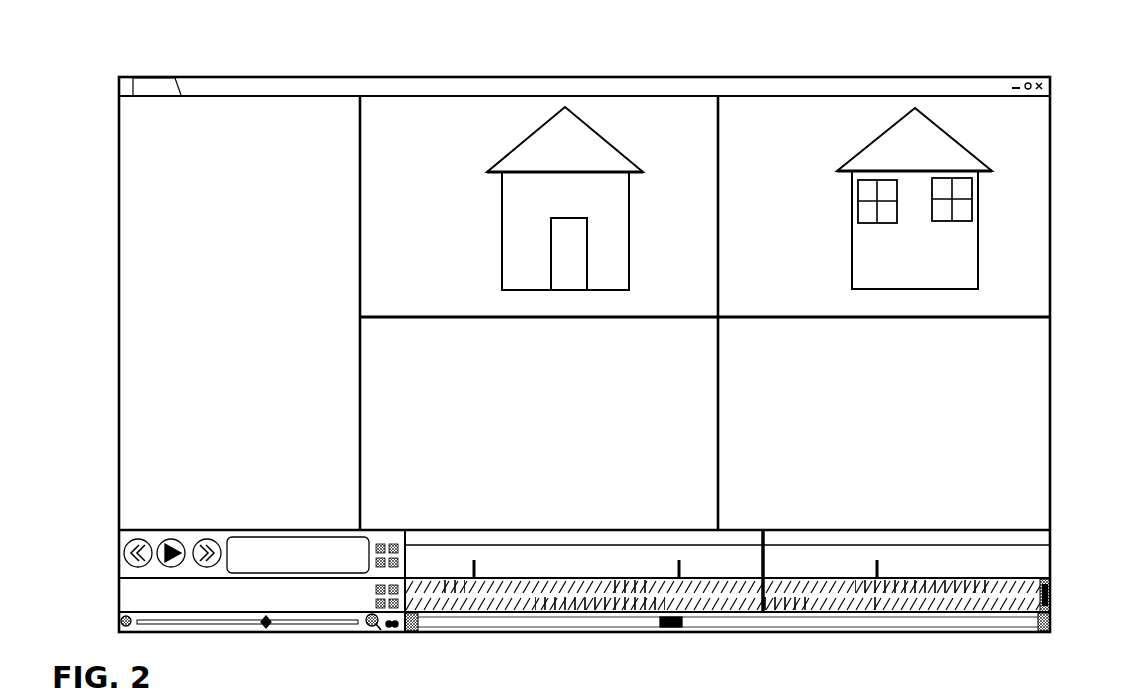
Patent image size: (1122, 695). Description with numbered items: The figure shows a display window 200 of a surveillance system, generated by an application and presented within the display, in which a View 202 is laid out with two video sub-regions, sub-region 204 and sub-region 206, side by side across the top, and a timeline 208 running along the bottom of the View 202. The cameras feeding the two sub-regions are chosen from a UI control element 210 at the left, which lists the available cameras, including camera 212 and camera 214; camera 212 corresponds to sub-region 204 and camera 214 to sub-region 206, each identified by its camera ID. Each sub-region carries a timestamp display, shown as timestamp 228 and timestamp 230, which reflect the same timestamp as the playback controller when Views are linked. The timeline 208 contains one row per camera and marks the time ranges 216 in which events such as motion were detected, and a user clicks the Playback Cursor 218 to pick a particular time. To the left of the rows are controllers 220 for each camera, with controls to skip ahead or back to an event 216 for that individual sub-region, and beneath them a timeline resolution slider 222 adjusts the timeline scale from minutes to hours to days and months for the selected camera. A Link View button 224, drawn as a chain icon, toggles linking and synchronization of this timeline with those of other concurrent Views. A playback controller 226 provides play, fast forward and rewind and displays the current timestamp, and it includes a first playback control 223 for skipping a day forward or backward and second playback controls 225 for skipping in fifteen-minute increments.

The display window 200 is at (118, 34).
The View 202 is at (1060, 525).
The sub-region 204 is at (628, 118).
The sub-region 206 is at (965, 113).
The timeline 208 is at (1060, 530).
The UI control element 210 is at (231, 110).
The camera 212 is at (130, 114).
The camera 214 is at (130, 135).
The time ranges 216 is at (880, 603).
The Playback Cursor 218 is at (763, 530).
The controllers 220 is at (112, 580).
The timeline resolution slider 222 is at (297, 623).
The first playback control 223 is at (384, 545).
The Link View button 224 is at (393, 631).
The second playback controls 225 is at (442, 548).
The playback controller 226 is at (112, 530).
The first timestamp display 228 is at (420, 102).
The timestamp 230 is at (785, 112).